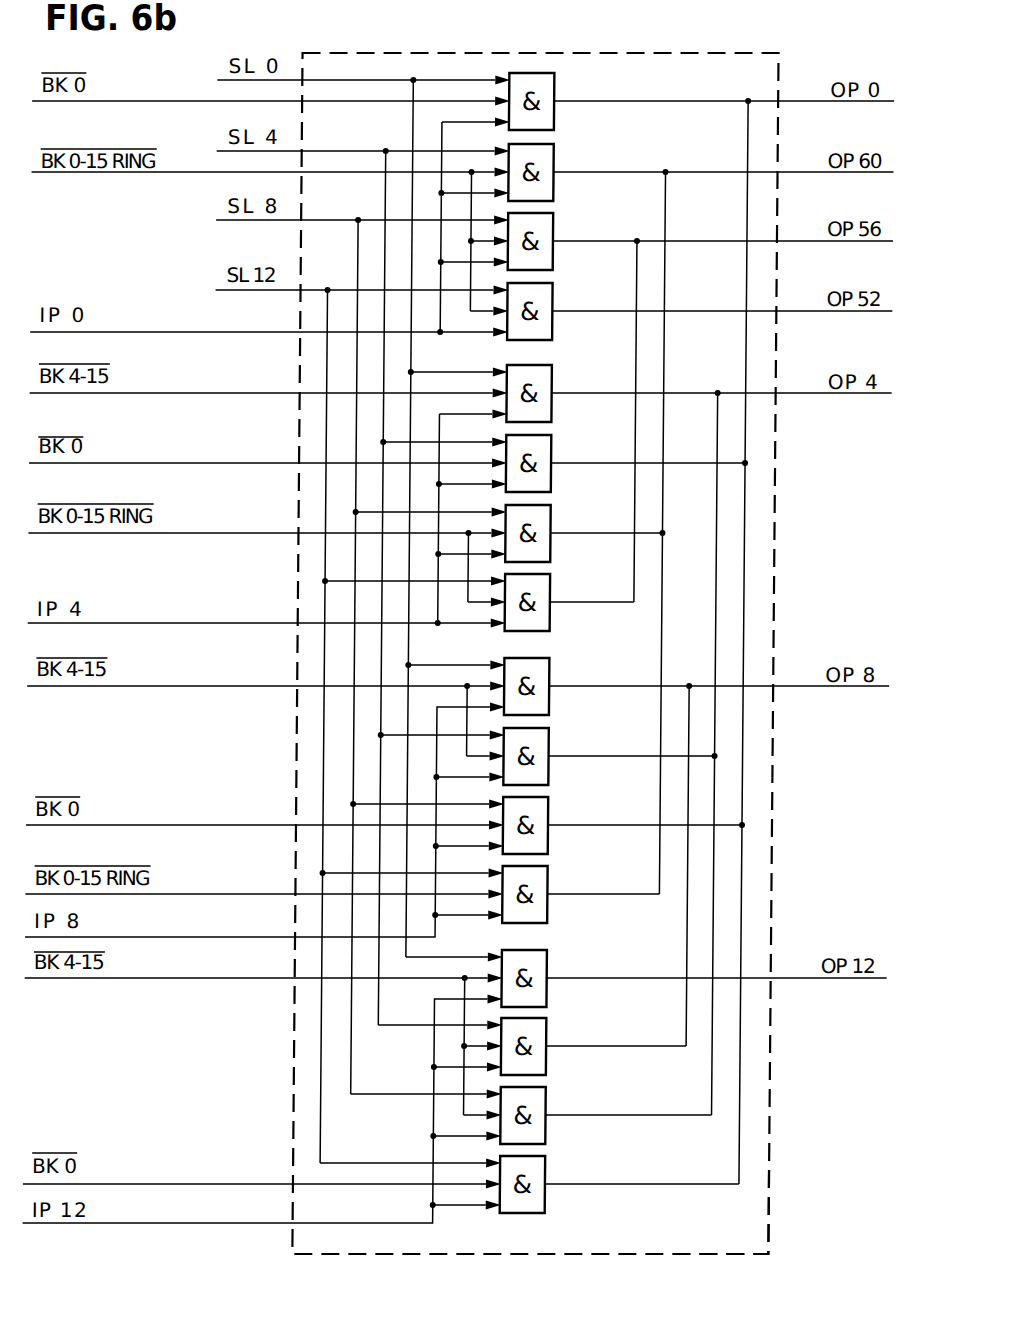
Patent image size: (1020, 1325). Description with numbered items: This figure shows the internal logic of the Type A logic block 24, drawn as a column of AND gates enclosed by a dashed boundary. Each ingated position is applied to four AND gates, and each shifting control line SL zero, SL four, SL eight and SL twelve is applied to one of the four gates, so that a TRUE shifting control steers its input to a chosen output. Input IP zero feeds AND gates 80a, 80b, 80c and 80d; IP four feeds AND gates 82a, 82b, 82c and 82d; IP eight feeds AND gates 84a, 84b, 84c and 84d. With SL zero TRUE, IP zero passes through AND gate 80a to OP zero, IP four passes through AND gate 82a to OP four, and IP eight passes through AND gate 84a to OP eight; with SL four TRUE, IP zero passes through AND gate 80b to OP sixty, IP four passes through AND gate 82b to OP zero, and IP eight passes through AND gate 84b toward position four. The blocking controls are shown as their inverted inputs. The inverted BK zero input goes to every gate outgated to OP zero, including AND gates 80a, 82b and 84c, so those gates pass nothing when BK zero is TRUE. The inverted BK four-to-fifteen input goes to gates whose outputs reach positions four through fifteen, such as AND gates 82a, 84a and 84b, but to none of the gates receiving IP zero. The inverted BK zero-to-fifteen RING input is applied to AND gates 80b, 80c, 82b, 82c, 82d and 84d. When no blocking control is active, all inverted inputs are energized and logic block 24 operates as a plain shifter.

The AND gate 80a is at (557, 87).
The AND gate 80b is at (557, 158).
The AND gate 80c is at (557, 227).
The AND gate 80d is at (557, 297).
The AND gate 82a is at (557, 379).
The AND gate 82b is at (557, 449).
The AND gate 82c is at (557, 519).
The AND gate 82d is at (557, 588).
The AND gate 84a is at (578, 954).
The AND gate 84b is at (578, 1022).
The AND gate 84c is at (578, 1091).
The AND gate 84d is at (578, 1160).
The logic block 24 is at (780, 1197).